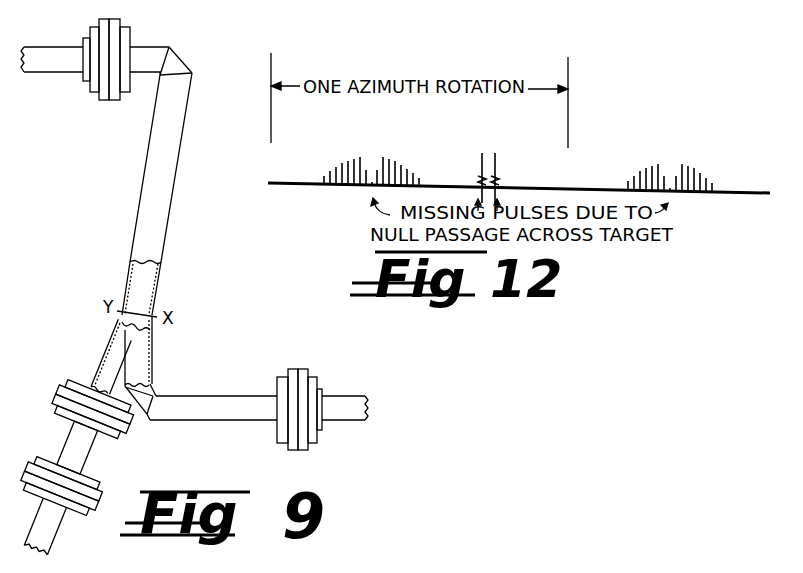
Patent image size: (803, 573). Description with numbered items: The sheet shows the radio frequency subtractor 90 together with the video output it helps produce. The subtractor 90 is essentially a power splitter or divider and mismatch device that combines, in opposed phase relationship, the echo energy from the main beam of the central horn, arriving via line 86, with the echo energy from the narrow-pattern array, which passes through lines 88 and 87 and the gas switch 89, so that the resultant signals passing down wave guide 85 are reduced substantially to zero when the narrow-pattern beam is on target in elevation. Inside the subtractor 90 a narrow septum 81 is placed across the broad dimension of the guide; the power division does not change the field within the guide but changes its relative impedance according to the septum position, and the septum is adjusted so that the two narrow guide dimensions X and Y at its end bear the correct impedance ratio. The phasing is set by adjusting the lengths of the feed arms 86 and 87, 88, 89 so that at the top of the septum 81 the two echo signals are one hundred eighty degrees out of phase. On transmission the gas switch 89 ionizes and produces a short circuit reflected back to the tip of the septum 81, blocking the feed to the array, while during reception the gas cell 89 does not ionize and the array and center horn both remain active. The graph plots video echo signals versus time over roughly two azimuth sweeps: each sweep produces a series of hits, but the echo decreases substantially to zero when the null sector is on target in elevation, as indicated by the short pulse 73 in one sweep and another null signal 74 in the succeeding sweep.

In FIG. 12, the short pulse 73 is at (371, 174).
In FIG. 12, the null signal 74 is at (670, 178).
In FIG. 9, the septum 81 is at (132, 350).
In FIG. 9, the wave guide 85 is at (172, 193).
In FIG. 9, the line 86 is at (341, 400).
In FIG. 9, the line 87 is at (100, 366).
In FIG. 9, the line 88 is at (52, 533).
In FIG. 9, the gas waveguide switch 89 is at (96, 458).
In FIG. 9, the radio frequency subtractor 90 is at (173, 291).